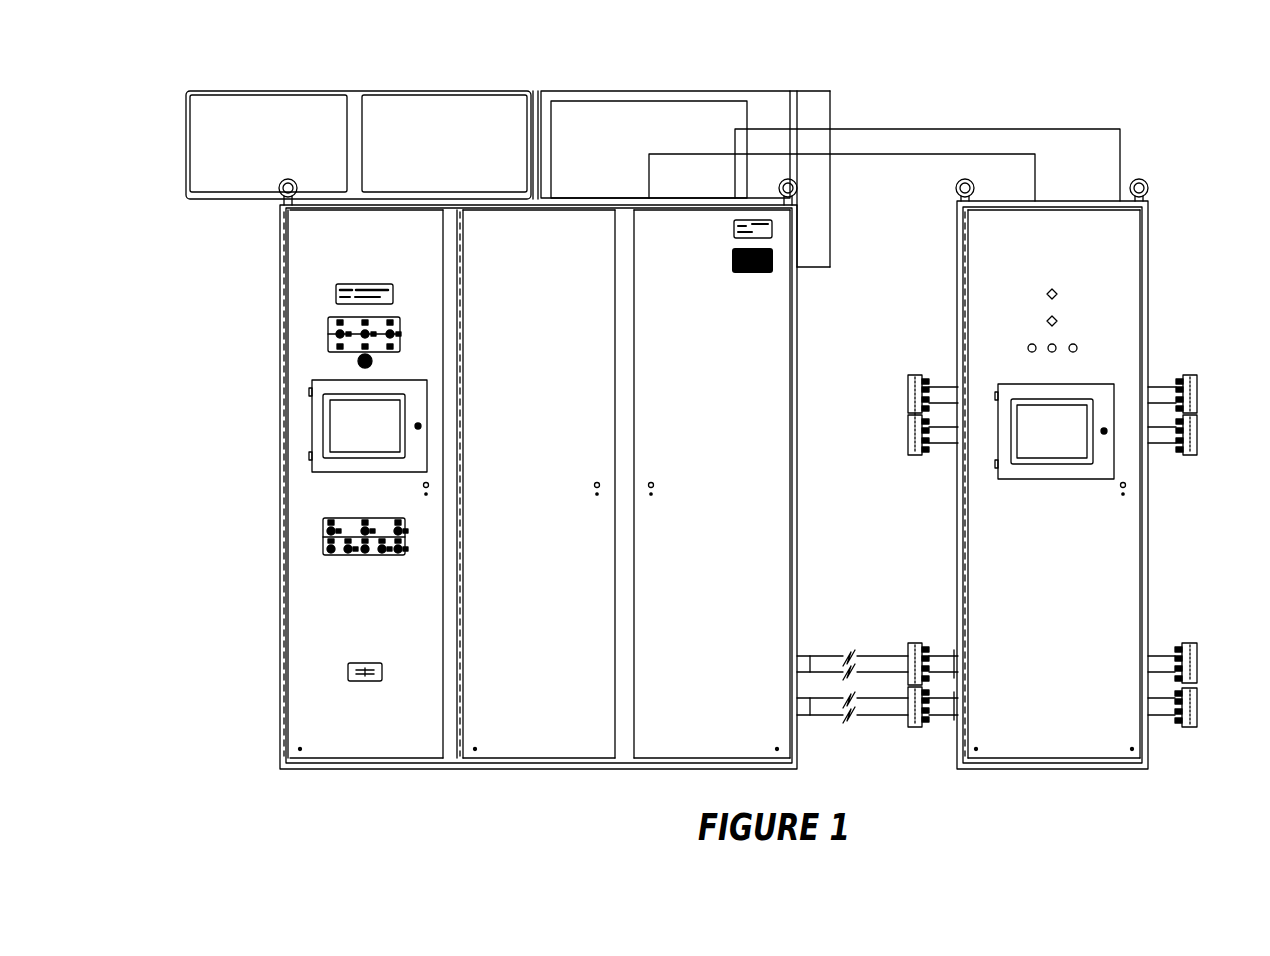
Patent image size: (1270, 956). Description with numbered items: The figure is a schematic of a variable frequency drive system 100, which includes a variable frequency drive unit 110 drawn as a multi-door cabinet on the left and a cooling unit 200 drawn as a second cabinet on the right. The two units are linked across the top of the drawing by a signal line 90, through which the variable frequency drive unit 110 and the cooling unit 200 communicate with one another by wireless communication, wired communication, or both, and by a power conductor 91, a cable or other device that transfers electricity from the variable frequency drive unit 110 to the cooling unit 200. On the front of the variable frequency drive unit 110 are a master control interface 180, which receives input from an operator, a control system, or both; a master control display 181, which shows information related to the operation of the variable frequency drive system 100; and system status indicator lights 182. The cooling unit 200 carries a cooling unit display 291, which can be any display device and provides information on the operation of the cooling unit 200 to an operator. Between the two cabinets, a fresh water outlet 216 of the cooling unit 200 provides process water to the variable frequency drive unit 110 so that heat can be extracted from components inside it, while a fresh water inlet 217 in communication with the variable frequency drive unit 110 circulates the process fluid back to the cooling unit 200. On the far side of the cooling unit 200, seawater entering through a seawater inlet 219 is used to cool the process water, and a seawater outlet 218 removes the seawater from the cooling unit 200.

The variable frequency drive system 100 is at (1206, 82).
The signal line 90 is at (905, 155).
The power conductor 91 is at (945, 128).
The variable frequency drive unit 110 is at (232, 764).
The master control interface 180 is at (328, 330).
The master control display 181 is at (336, 458).
The system status indicator lights 182 is at (323, 535).
The cooling unit 200 is at (1181, 772).
The fresh water outlet 216 is at (910, 643).
The fresh water inlet 217 is at (910, 728).
The seawater outlet 218 is at (1190, 373).
The seawater inlet 219 is at (1190, 457).
The cooling unit display 291 is at (1082, 463).